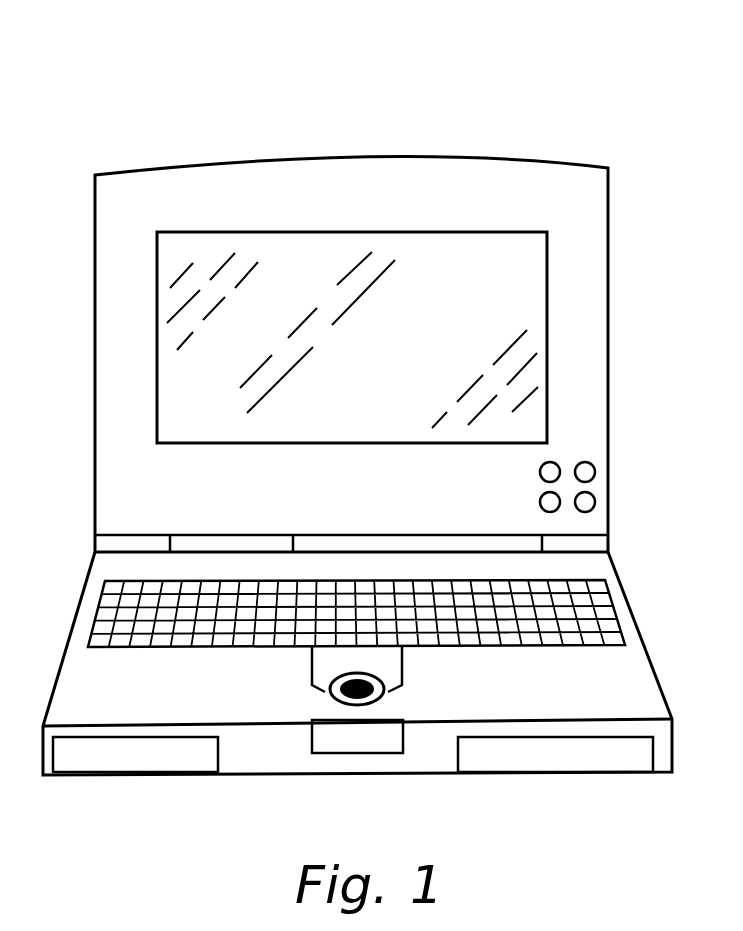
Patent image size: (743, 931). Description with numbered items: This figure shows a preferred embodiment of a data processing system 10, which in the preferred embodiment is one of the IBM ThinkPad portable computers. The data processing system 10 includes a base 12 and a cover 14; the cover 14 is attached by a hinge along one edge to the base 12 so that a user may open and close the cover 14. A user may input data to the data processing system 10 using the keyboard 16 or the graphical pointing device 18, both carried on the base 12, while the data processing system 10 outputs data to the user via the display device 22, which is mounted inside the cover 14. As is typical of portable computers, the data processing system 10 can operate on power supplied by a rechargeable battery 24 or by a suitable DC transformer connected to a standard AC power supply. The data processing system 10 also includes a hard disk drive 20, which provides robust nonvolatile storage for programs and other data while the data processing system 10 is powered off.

The data processing system 10 is at (546, 122).
The base 12 is at (635, 695).
The cover 14 is at (608, 252).
The keyboard 16 is at (620, 617).
The graphical pointing device 18 is at (372, 698).
The hard disk drive 20 is at (583, 747).
The display device 22 is at (547, 343).
The rechargeable battery 24 is at (163, 747).